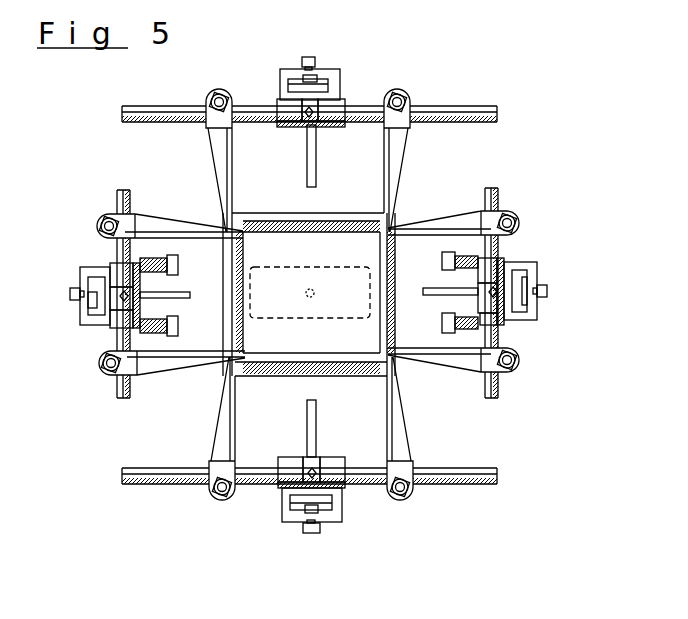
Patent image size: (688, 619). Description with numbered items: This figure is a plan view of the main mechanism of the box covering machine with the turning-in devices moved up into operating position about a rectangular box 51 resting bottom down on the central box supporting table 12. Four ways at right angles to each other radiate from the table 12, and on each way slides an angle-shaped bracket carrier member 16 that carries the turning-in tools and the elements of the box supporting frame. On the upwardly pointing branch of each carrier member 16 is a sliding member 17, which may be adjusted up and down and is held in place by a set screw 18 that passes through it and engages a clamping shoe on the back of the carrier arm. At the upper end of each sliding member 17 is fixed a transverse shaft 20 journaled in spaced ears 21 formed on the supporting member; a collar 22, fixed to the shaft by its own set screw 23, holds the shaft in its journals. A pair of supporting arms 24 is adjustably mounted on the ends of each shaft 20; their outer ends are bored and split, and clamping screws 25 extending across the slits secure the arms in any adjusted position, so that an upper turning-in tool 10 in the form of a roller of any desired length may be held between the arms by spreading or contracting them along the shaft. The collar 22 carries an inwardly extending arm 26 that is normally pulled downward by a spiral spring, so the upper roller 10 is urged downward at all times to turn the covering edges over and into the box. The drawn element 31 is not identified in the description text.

The upper turning-in tools 10 is at (315, 284).
The table 12 is at (295, 275).
The carrier member 16 is at (518, 275).
The sliding member 17 is at (83, 277).
The set screw 18 is at (70, 295).
The shaft 20 is at (173, 103).
The spaced ears 21 is at (281, 105).
The collar 22 is at (310, 114).
The set screw 23 is at (300, 123).
The supporting arms 24 is at (221, 170).
The clamping screws 25 is at (105, 223).
The inwardly extending arm 26 is at (314, 174).
The bolt 31 is at (179, 260).
The box 51 is at (347, 230).